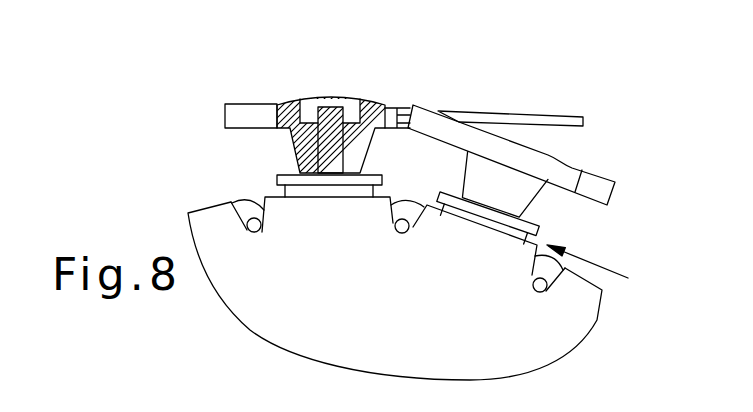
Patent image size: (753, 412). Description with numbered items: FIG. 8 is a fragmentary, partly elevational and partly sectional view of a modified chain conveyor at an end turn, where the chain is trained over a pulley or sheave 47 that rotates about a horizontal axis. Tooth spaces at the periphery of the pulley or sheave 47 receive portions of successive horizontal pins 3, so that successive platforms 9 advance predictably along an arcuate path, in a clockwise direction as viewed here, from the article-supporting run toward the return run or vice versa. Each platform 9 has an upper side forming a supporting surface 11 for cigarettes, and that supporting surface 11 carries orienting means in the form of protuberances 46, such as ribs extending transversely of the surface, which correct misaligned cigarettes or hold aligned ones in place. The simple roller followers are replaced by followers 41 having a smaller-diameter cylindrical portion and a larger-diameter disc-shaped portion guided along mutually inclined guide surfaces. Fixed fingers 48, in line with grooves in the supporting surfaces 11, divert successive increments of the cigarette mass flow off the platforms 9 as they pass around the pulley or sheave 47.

The horizontal pin 3 is at (262, 232).
The platform 9 is at (240, 115).
The supporting surface 11 is at (251, 102).
The follower 41 is at (610, 275).
The protuberance 46 is at (510, 138).
The pulley or sheave 47 is at (260, 323).
The fixed finger 48 is at (560, 120).